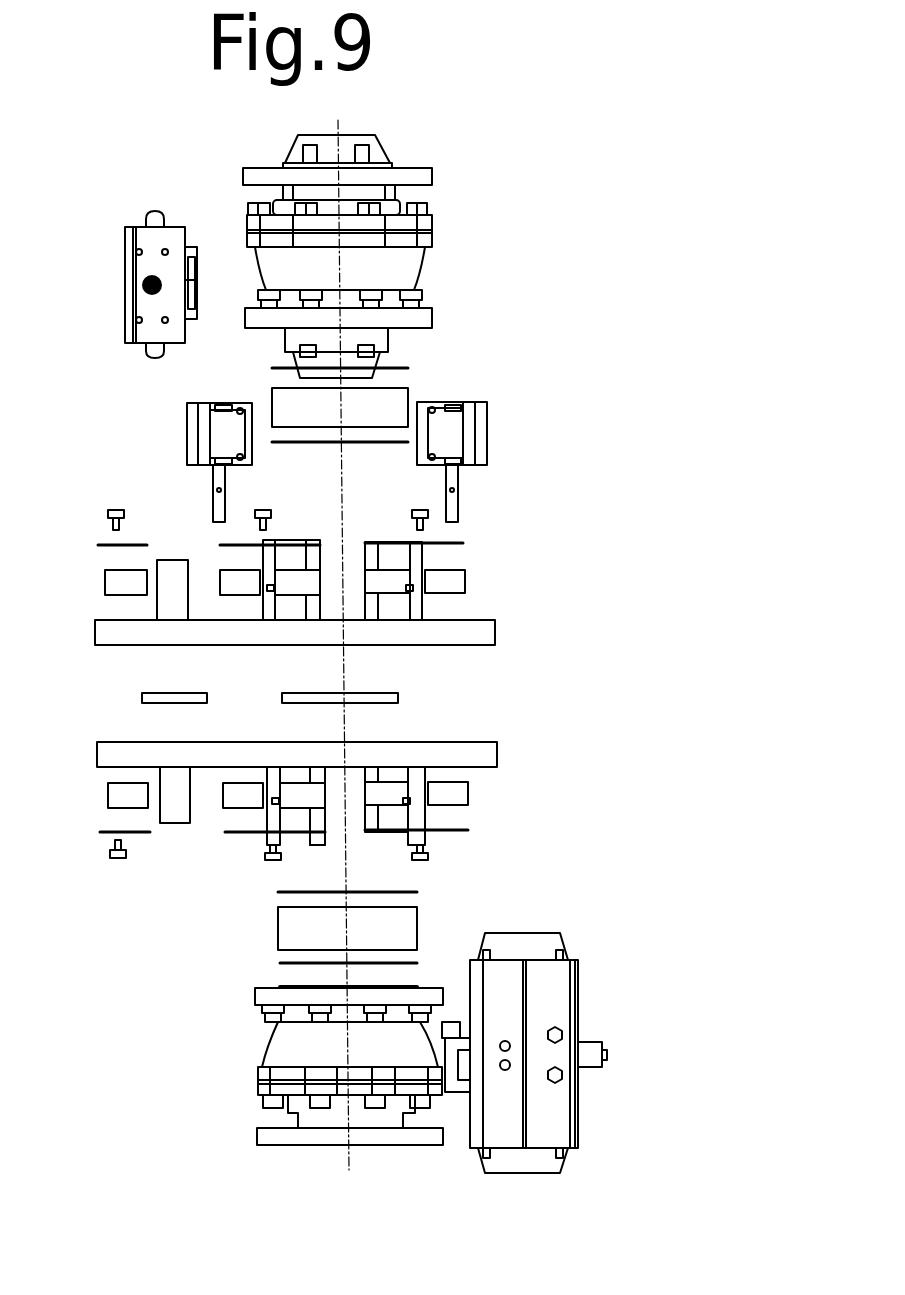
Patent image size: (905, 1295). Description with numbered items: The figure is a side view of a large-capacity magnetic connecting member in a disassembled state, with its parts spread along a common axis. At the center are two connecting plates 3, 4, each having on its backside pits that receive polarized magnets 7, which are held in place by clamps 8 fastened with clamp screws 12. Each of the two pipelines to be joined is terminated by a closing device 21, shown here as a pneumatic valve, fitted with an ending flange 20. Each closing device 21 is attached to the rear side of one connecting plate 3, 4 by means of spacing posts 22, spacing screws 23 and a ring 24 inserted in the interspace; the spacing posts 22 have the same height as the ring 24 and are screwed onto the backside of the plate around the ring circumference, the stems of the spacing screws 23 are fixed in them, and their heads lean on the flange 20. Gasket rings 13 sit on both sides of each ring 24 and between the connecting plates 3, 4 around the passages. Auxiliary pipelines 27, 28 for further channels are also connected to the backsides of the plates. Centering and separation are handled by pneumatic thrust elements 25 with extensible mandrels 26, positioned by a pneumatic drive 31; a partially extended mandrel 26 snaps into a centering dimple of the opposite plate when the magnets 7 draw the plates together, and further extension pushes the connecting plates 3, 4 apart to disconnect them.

The connecting plate 3 is at (485, 632).
The connecting plate 4 is at (488, 755).
The magnets 7 is at (108, 580).
The clamps 8 is at (100, 547).
The clamp screws 12 is at (108, 512).
The gasket rings 13 is at (402, 366).
The ending flange 20 is at (432, 176).
The closing device 21 is at (403, 262).
The spacing posts 22 is at (417, 607).
The spacing screws 23 is at (403, 290).
The ring 24 is at (395, 397).
The pneumatic thrust element 25 is at (487, 430).
The extensible mandrel 26 is at (455, 483).
The auxiliary pipeline 27 is at (173, 582).
The auxiliary pipeline 28 is at (173, 807).
The pneumatic drive 31 is at (182, 233).